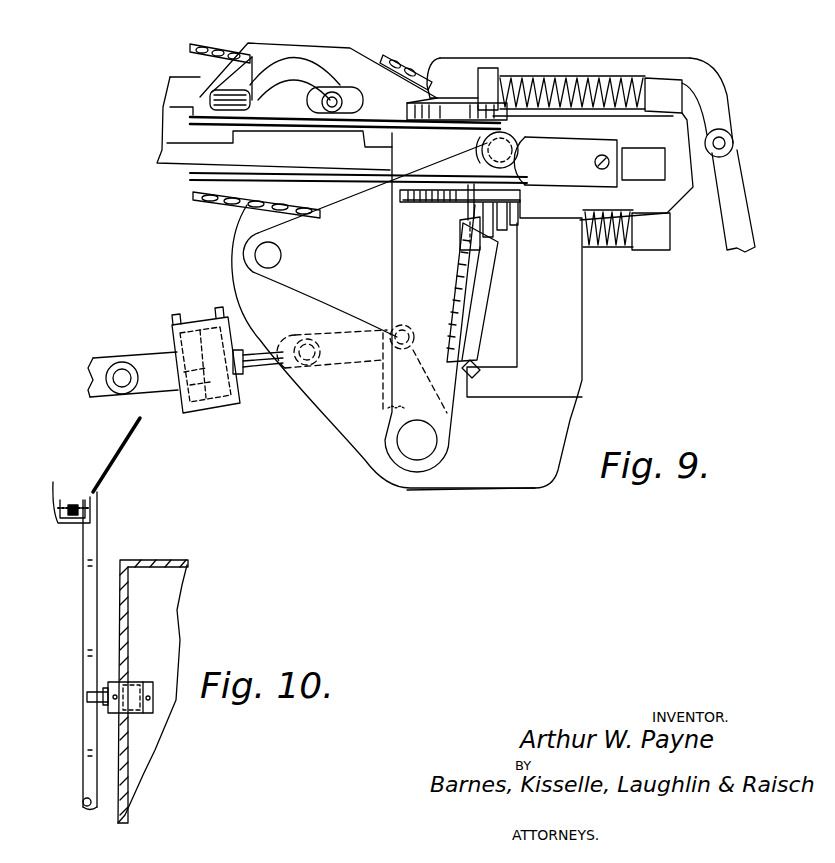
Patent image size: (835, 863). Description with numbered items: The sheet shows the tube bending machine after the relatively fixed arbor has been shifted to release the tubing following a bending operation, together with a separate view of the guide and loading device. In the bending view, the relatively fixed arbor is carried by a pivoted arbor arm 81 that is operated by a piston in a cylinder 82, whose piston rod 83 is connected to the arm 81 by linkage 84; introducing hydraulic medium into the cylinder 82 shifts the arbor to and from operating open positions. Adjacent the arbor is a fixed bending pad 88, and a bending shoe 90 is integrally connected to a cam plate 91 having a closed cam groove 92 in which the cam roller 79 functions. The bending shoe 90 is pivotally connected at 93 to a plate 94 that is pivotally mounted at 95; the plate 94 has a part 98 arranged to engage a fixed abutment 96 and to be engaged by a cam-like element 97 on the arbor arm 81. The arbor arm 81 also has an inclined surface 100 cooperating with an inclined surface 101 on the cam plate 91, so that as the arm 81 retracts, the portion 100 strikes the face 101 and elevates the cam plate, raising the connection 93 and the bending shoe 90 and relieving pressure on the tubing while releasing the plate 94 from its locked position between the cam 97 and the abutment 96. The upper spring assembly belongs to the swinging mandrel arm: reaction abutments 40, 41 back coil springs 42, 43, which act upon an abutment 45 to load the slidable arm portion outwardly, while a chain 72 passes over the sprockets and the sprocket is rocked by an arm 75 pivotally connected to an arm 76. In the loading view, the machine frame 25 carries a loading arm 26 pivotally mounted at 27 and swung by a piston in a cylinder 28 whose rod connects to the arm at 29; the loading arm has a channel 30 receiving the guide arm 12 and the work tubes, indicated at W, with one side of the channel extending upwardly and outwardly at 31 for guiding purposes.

In FIG. 10, the guide arm 12 is at (70, 520).
In FIG. 10, the base or frame 25 is at (150, 562).
In FIG. 10, the loading arm 26 is at (83, 598).
In FIG. 10, the pivot 27 is at (82, 805).
In FIG. 10, the cylinder 28 is at (133, 690).
In FIG. 10, the piston rod connection 29 is at (83, 700).
In FIG. 10, the channel 30 is at (55, 516).
In FIG. 10, the upwardly and outwardly extending channel side 31 is at (120, 452).
In FIG. 9, the reaction abutment 40 is at (655, 245).
In FIG. 9, the reaction abutment 41 is at (665, 85).
In FIG. 9, the coil spring 42 is at (616, 248).
In FIG. 9, the coil spring 43 is at (600, 75).
In FIG. 9, the abutment 45 is at (490, 75).
In FIG. 9, the chain 72 is at (224, 32).
In FIG. 9, the arm 75 is at (695, 88).
In FIG. 9, the arm 76 is at (740, 194).
In FIG. 9, the roller 79 is at (337, 92).
In FIG. 9, the pivoted arbor arm 81 is at (447, 285).
In FIG. 9, the cylinder 82 is at (208, 405).
In FIG. 9, the piston rod 83 is at (264, 362).
In FIG. 9, the linkage 84 is at (340, 360).
In FIG. 9, the fixed bending pad 88 is at (507, 200).
In FIG. 9, the bending shoe 90 is at (450, 100).
In FIG. 9, the cam plate 91 is at (281, 30).
In FIG. 9, the closed cam groove 92 is at (303, 54).
In FIG. 9, the pivotal connection 93 is at (520, 140).
In FIG. 9, the plate 94 is at (367, 251).
In FIG. 9, the pivot mounting 95 is at (255, 256).
In FIG. 9, the fixed abutment 96 is at (475, 374).
In FIG. 9, the cam-like element 97 is at (460, 233).
In FIG. 9, the part 98 is at (480, 300).
In FIG. 9, the inclined surface 100 is at (380, 152).
In FIG. 9, the inclined surface 101 is at (398, 106).
In FIG. 9, the work W is at (195, 115).
In FIG. 10, the work W is at (72, 503).